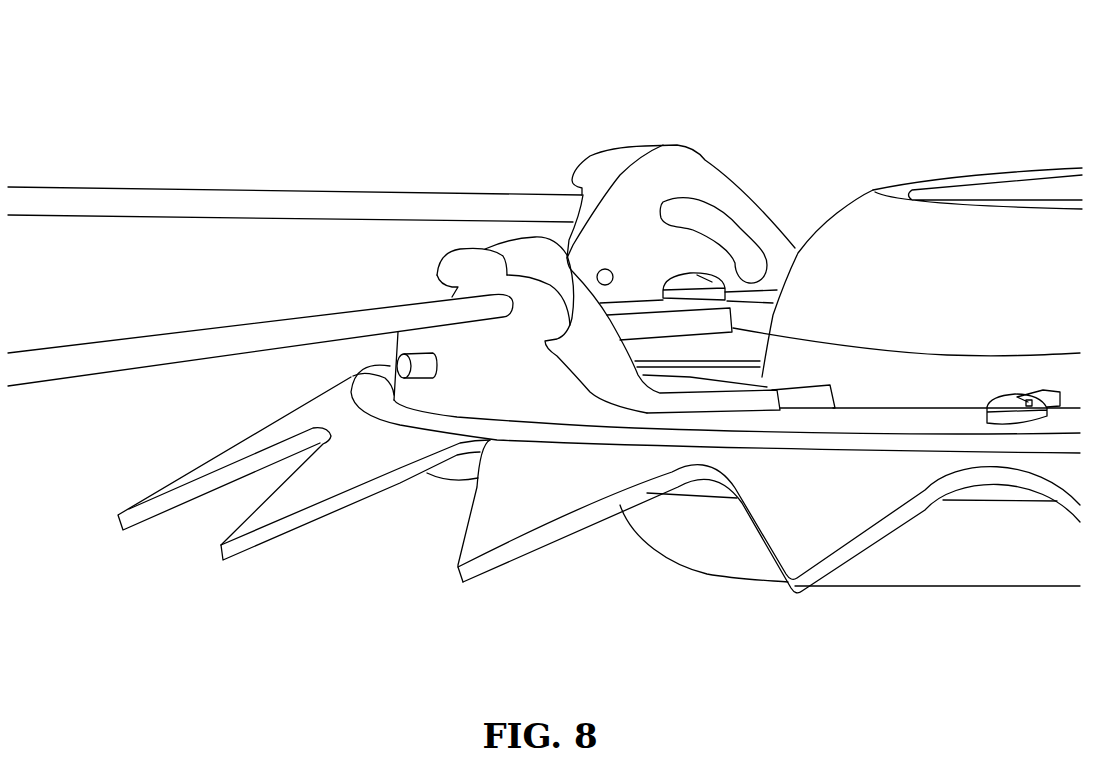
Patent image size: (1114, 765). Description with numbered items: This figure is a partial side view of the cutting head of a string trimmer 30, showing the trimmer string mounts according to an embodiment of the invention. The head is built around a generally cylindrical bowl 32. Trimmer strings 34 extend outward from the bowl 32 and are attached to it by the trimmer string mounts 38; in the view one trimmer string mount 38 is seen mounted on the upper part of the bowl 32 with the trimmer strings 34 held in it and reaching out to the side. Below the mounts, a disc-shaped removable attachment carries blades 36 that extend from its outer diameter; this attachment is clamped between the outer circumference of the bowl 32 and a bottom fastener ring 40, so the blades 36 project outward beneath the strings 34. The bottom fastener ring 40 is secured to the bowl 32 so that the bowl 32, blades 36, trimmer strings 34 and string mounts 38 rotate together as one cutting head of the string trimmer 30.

The string trimmer 30 is at (972, 60).
The generally cylindrical bowl 32 is at (933, 562).
The trimmer strings 34 is at (210, 187).
The blades 36 is at (290, 497).
The trimmer string mounts 38 is at (690, 172).
The bottom fastener ring 40 is at (1012, 492).